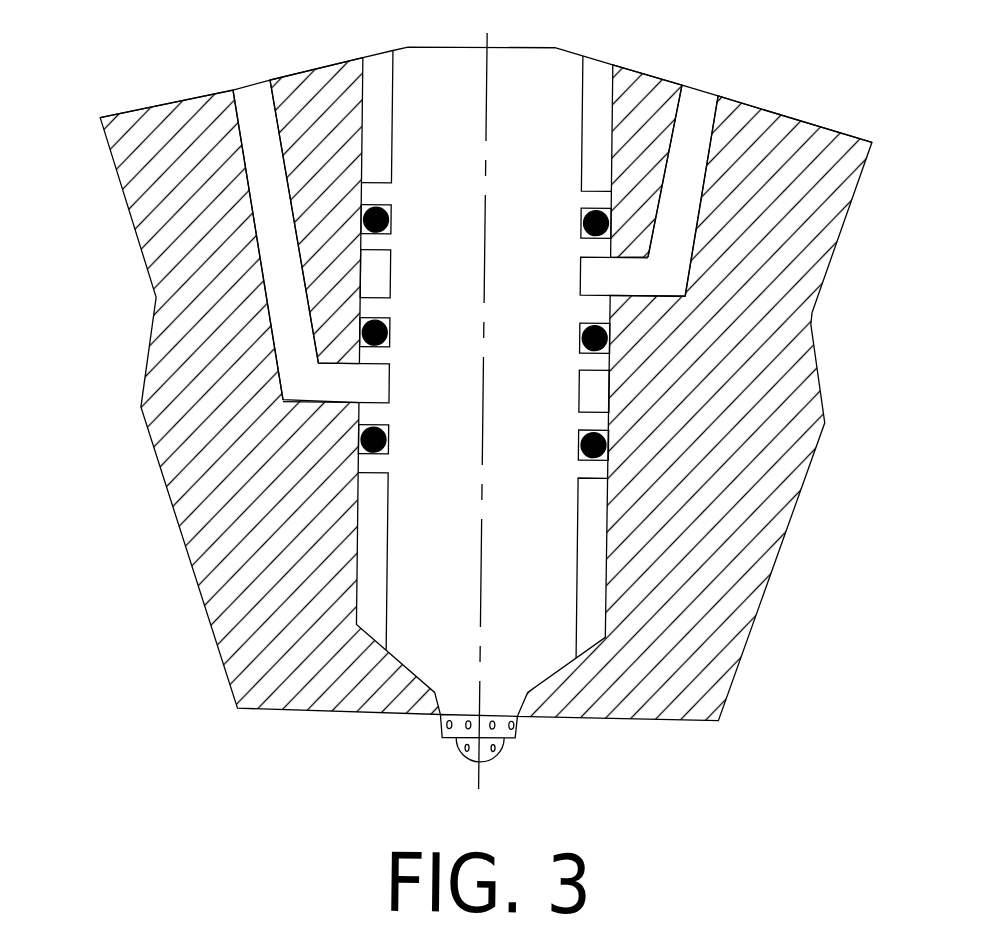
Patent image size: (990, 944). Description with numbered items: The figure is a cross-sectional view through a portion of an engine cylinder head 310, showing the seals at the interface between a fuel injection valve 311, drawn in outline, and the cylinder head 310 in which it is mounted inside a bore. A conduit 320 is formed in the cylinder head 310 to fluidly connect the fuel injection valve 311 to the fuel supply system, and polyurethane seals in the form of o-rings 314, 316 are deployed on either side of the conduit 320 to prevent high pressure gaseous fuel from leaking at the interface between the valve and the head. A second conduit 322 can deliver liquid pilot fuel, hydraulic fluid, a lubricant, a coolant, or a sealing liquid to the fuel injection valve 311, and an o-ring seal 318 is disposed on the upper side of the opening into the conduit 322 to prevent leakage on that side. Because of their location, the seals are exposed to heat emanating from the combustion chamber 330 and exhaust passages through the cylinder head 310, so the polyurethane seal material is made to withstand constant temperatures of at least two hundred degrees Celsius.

The cylinder head 310 is at (231, 433).
The fuel injection valve 311 is at (459, 587).
The o-ring 314 is at (606, 439).
The o-ring 316 is at (609, 332).
The o-ring seal 318 is at (375, 208).
The conduit 320 is at (289, 312).
The conduit 322 is at (671, 242).
The combustion chamber 330 is at (600, 824).